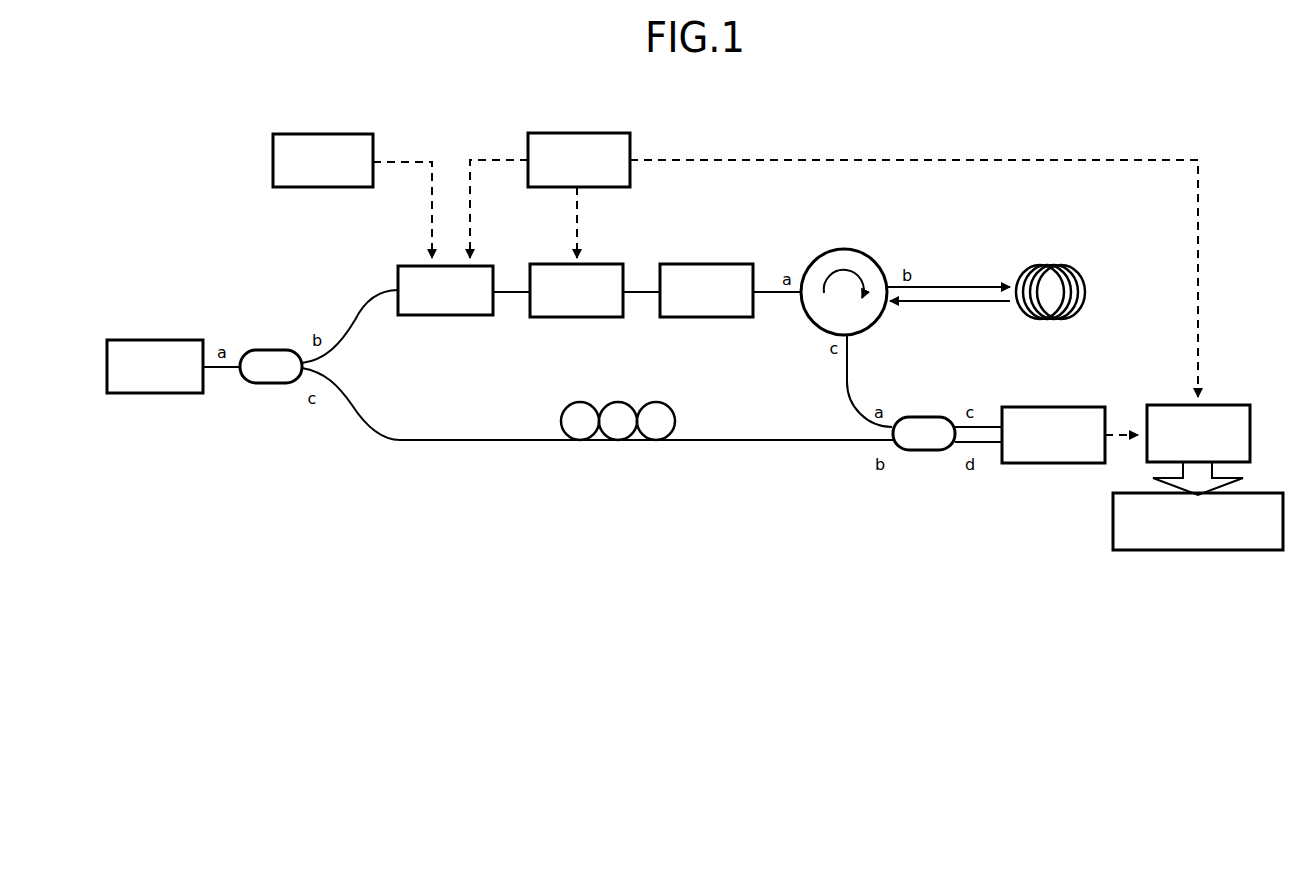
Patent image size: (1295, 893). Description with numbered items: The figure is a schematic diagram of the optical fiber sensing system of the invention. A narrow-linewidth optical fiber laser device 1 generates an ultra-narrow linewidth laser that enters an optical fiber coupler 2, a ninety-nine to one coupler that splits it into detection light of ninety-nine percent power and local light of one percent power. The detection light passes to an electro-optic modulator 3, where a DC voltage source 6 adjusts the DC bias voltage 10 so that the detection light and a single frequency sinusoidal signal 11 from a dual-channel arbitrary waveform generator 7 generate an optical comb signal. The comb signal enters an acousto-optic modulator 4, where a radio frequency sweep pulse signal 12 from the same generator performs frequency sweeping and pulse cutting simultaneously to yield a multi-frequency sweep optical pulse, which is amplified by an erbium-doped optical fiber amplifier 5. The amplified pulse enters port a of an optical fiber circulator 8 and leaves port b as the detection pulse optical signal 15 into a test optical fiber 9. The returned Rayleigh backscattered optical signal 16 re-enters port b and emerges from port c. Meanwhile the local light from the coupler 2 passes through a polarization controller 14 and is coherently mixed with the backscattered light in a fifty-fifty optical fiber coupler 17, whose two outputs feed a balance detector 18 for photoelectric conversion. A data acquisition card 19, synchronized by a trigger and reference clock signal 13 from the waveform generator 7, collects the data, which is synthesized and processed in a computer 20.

The narrow-linewidth optical fiber laser device 1 is at (155, 366).
The optical fiber coupler 2 is at (271, 350).
The electro-optic modulator 3 is at (445, 290).
The acousto-optic modulator 4 is at (576, 290).
The erbium-doped optical fiber amplifier 5 is at (706, 290).
The DC voltage source 6 is at (323, 160).
The dual-channel arbitrary waveform generator 7 is at (579, 160).
The optical fiber circulator 8 is at (844, 276).
The test optical fiber 9 is at (1050, 274).
The DC bias voltage 10 is at (402, 194).
The single frequency sinusoidal signal 11 is at (499, 194).
The radio frequency sweep pulse signal 12 is at (598, 222).
The trigger and reference clock signal 13 is at (914, 263).
The polarization controller 14 is at (618, 405).
The detection pulse optical signal 15 is at (948, 272).
The Rayleigh backscattered optical signal 16 is at (950, 319).
The 50:50 optical fiber coupler 17 is at (924, 416).
The balance detector 18 is at (1053, 435).
The data acquisition card 19 is at (1198, 433).
The computer 20 is at (1198, 521).